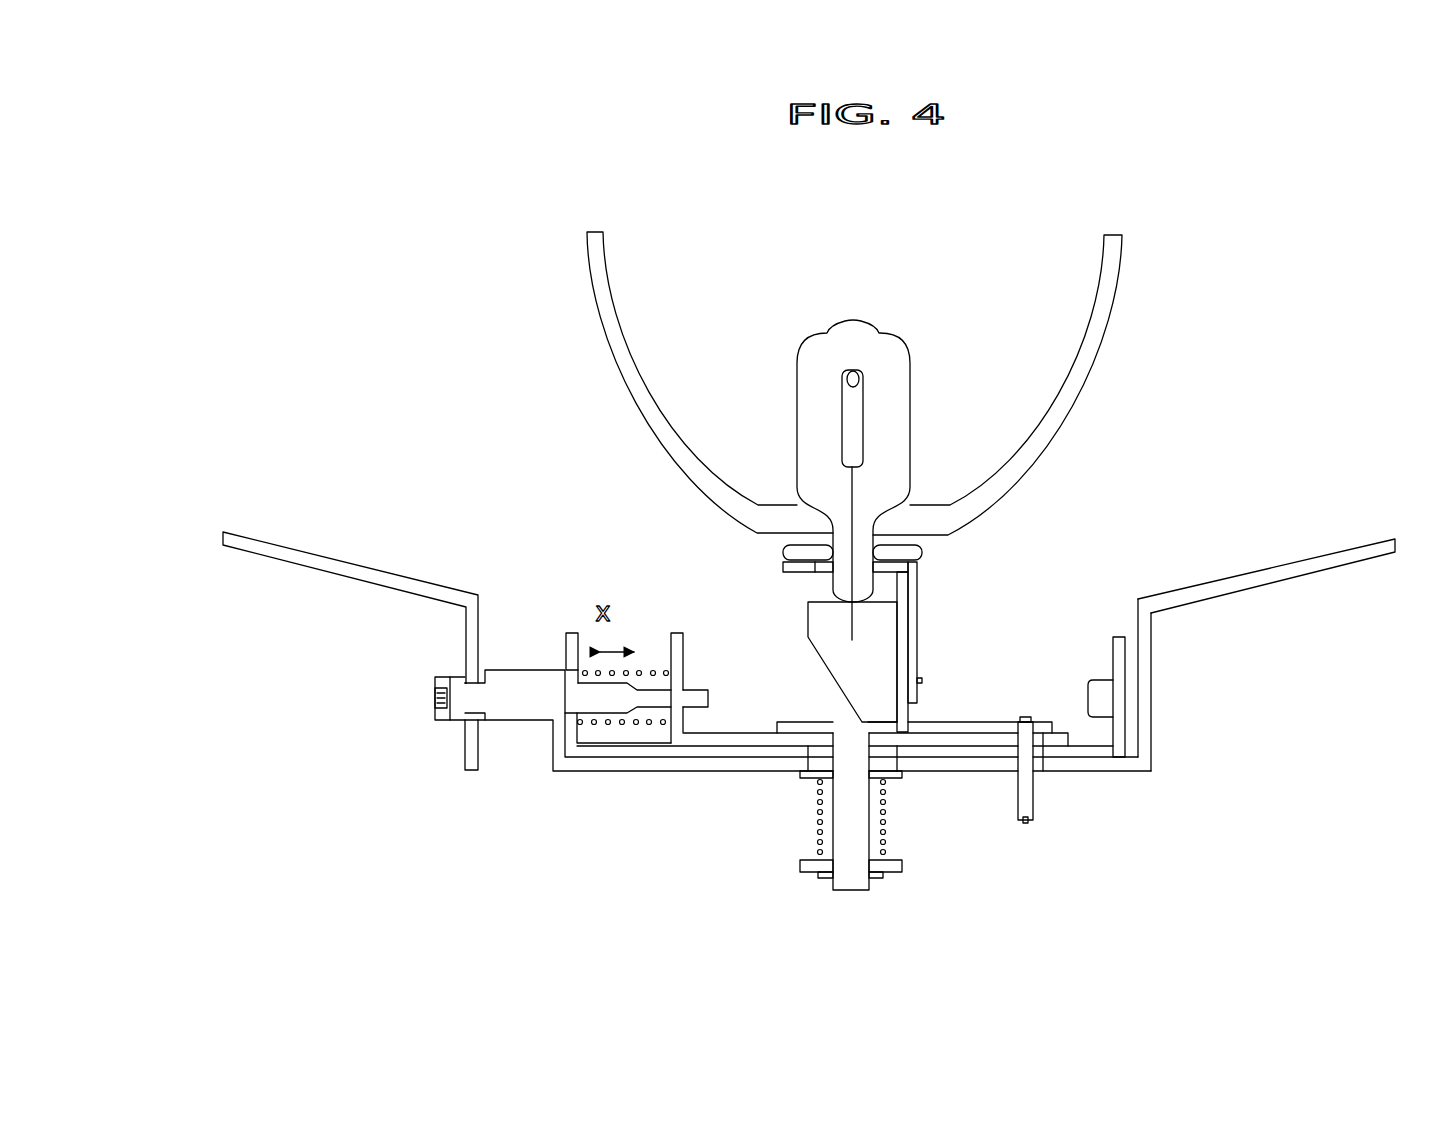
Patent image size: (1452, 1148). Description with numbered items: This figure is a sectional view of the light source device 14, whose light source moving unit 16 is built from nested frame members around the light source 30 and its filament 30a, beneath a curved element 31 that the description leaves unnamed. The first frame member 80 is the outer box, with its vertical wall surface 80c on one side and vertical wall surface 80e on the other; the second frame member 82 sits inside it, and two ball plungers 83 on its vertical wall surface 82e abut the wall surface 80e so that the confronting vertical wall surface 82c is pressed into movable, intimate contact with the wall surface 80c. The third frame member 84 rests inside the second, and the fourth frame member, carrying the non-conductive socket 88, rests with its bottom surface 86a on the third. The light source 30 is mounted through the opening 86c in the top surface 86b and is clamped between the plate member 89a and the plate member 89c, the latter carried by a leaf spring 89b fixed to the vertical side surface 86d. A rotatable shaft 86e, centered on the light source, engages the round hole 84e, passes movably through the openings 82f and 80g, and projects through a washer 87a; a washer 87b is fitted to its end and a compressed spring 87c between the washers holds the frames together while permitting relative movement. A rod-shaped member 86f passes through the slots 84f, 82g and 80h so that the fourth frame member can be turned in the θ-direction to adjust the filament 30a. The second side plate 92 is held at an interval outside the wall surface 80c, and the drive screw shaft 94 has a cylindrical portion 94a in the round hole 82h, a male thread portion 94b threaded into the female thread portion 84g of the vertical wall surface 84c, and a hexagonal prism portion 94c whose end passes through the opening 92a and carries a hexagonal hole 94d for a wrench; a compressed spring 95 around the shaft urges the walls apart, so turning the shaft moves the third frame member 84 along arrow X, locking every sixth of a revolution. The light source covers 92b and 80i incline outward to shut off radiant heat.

The light source device 14 is at (1230, 222).
The light source moving unit 16 is at (1260, 792).
The light source 30 is at (885, 347).
The filament 30a is at (866, 404).
The reflector 31 is at (1090, 353).
The first frame member 80 is at (692, 762).
The vertical wall surface 80c is at (557, 752).
The vertical wall surface 80e is at (1143, 668).
The opening 80g is at (832, 745).
The slot 80h is at (1043, 756).
The light source cover 80i is at (1326, 562).
The second frame member 82 is at (649, 750).
The vertical wall surface 82c is at (568, 633).
The vertical wall surface 82e is at (1118, 636).
The opening 82f is at (808, 752).
The slot 82g is at (1043, 747).
The round hole 82h is at (540, 670).
The ball plungers 83 is at (1103, 690).
The third frame member 84 is at (742, 733).
The vertical wall surface 84c is at (678, 633).
The round hole 84e is at (818, 843).
The slot 84f is at (1043, 737).
The female thread portion 84g is at (657, 670).
The bottom surface 86a is at (840, 731).
The top surface 86b is at (782, 558).
The opening 86c is at (822, 568).
The vertical side surface 86d is at (903, 714).
The rotatable shaft 86e is at (856, 883).
The rod-shaped member 86f is at (1026, 822).
The washer 87a is at (888, 776).
The washer 87b is at (896, 868).
The compressed spring 87c is at (887, 832).
The socket 88 is at (885, 632).
The plate member 89a is at (781, 548).
The leaf spring 89b is at (917, 592).
The plate member 89c is at (923, 552).
The second side plate 92 is at (467, 752).
The opening 92a is at (465, 664).
The light source cover 92b is at (325, 560).
The drive screw shaft 94 is at (518, 718).
The cylindrical portion 94a is at (600, 700).
The male thread portion 94b is at (685, 698).
The hexagonal prism portion 94c is at (498, 670).
The hexagonal hole 94d is at (437, 698).
The compressed spring 95 is at (623, 718).